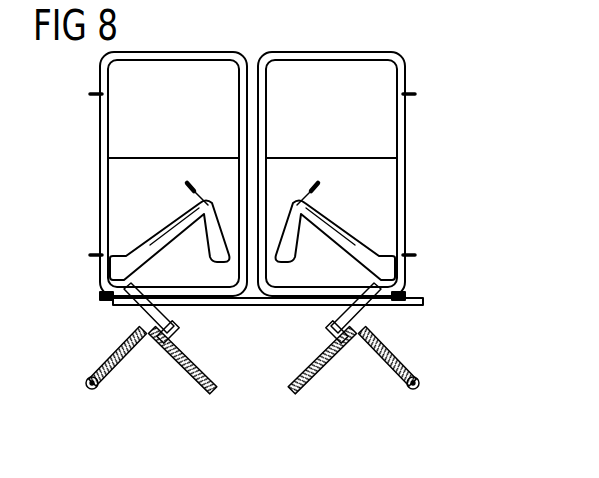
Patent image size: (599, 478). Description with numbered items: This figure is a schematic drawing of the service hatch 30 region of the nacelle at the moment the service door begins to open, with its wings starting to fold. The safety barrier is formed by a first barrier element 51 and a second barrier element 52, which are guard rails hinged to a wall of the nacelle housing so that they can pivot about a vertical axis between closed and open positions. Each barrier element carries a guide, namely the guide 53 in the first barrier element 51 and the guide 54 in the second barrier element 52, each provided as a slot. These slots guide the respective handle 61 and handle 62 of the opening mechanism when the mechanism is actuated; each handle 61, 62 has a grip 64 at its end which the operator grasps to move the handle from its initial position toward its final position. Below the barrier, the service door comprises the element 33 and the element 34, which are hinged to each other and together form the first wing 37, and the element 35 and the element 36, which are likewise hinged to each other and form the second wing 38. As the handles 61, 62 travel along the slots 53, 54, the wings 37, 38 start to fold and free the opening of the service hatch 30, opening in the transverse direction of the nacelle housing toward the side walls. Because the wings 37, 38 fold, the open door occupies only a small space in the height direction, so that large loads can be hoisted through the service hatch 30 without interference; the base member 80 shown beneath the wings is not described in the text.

The service hatch 30 is at (462, 84).
The first barrier element 51 is at (101, 131).
The second barrier element 52 is at (405, 137).
The guide 53 is at (148, 245).
The guide 54 is at (357, 243).
The handle 61 is at (196, 206).
The handle 62 is at (309, 207).
The grip 64 is at (196, 183).
The base bench 80 is at (226, 301).
The element 33 is at (133, 355).
The element 34 is at (182, 371).
The element 35 is at (322, 372).
The element 36 is at (372, 355).
The first wing 37 is at (151, 368).
The second wing 38 is at (353, 368).